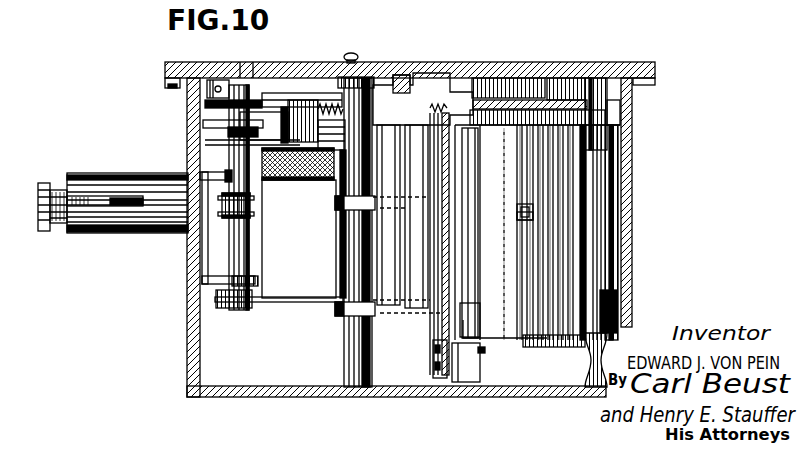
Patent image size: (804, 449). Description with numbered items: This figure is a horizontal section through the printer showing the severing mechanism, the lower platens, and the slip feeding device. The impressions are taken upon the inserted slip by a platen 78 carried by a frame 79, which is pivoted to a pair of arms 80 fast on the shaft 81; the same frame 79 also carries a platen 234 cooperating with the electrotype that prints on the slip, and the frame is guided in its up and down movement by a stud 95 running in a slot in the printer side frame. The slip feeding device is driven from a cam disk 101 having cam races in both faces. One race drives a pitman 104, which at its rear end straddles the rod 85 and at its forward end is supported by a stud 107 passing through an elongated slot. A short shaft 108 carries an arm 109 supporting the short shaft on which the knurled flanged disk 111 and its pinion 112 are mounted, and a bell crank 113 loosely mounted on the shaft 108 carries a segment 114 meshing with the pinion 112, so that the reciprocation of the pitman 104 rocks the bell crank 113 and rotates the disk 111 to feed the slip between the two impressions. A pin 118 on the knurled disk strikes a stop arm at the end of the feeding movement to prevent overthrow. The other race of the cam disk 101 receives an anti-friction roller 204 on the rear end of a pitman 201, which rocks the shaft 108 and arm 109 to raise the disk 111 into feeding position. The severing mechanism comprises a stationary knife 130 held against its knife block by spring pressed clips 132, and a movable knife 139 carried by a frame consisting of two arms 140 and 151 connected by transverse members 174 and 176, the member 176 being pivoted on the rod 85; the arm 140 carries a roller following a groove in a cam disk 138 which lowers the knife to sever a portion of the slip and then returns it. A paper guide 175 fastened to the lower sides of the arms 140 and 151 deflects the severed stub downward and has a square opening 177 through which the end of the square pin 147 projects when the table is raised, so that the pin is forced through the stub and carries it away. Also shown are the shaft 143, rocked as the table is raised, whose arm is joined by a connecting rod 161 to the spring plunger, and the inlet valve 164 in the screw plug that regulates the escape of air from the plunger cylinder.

The rod 85 is at (616, 73).
The stud 107 is at (253, 73).
The pitman 201 is at (267, 73).
The inlet valve 164 is at (45, 228).
The shaft 143 is at (237, 248).
The connecting rod 161 is at (205, 229).
The bell crank 113 is at (207, 112).
The short shaft 108 is at (207, 126).
The arm 109 is at (240, 141).
The segment 114 is at (288, 108).
The pinion 112 is at (307, 100).
The pin 118 is at (325, 146).
The flanged disk 111 is at (298, 178).
The shaft 81 is at (357, 56).
The arms 80 is at (335, 209).
The stud 95 is at (402, 74).
The platen 234 is at (385, 133).
The platen 78 is at (415, 135).
The frame 79 is at (390, 318).
The stationary knife 130 is at (447, 322).
The spring pressed clips 132 is at (437, 357).
The movable knife 139 is at (457, 355).
The anti-friction roller 204 is at (482, 85).
The cam disk 101 is at (547, 85).
The pitman 104 is at (584, 95).
The arm 140 is at (520, 133).
The cam disk 138 is at (511, 128).
The square opening 177 is at (517, 211).
The square pin 147 is at (520, 218).
The paper guide 175 is at (555, 273).
The transverse member 176 is at (617, 297).
The transverse member 174 is at (470, 325).
The arm 151 is at (548, 345).